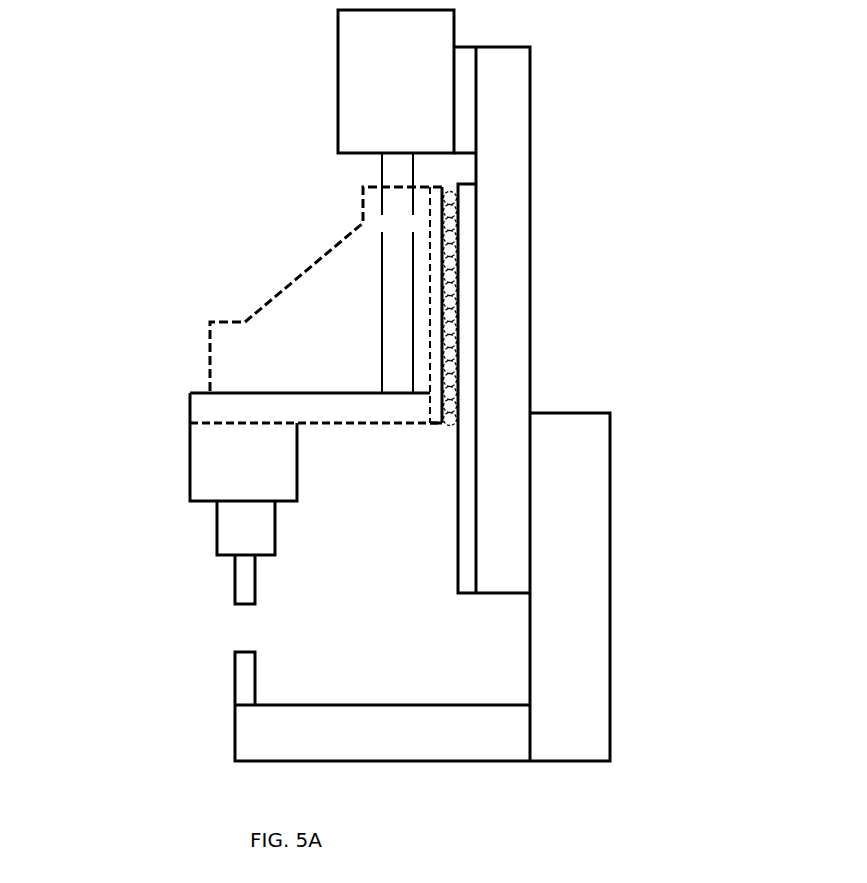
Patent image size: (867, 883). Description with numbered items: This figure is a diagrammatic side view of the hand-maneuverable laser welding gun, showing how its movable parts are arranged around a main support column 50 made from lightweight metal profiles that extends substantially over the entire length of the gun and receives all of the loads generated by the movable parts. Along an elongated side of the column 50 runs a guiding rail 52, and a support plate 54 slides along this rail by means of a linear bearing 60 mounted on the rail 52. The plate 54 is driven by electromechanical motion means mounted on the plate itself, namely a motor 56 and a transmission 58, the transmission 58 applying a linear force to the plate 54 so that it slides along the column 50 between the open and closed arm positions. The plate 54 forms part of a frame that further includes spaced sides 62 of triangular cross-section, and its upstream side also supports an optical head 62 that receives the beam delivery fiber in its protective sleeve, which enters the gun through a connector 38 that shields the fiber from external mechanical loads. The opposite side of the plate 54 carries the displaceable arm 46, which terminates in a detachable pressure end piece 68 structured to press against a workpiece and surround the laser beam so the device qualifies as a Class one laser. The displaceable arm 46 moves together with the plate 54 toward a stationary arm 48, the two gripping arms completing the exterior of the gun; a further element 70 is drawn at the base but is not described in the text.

The connector 38 is at (186, 457).
The displaceable arm 46 is at (288, 574).
The stationary arm 48 is at (613, 574).
The main support column 50 is at (532, 207).
The guiding rail 52 is at (454, 531).
The support plate 54 is at (246, 409).
The motor 56 is at (336, 64).
The transmission 58 is at (398, 217).
The linear bearing 60 is at (446, 422).
The optical head 62 is at (292, 280).
The pressure end piece 68 is at (231, 579).
The stop 70 is at (231, 679).